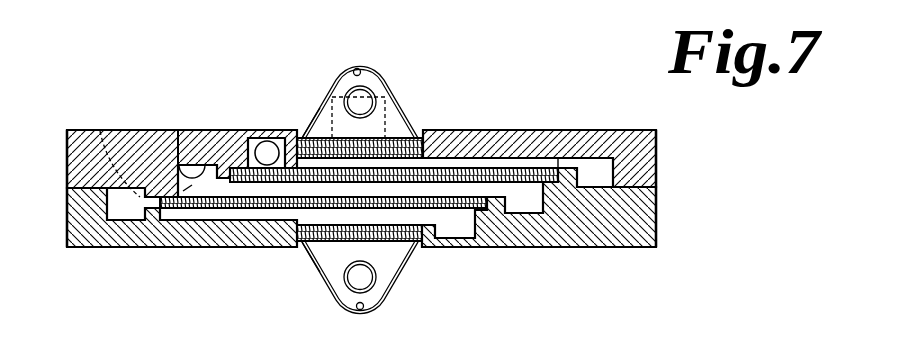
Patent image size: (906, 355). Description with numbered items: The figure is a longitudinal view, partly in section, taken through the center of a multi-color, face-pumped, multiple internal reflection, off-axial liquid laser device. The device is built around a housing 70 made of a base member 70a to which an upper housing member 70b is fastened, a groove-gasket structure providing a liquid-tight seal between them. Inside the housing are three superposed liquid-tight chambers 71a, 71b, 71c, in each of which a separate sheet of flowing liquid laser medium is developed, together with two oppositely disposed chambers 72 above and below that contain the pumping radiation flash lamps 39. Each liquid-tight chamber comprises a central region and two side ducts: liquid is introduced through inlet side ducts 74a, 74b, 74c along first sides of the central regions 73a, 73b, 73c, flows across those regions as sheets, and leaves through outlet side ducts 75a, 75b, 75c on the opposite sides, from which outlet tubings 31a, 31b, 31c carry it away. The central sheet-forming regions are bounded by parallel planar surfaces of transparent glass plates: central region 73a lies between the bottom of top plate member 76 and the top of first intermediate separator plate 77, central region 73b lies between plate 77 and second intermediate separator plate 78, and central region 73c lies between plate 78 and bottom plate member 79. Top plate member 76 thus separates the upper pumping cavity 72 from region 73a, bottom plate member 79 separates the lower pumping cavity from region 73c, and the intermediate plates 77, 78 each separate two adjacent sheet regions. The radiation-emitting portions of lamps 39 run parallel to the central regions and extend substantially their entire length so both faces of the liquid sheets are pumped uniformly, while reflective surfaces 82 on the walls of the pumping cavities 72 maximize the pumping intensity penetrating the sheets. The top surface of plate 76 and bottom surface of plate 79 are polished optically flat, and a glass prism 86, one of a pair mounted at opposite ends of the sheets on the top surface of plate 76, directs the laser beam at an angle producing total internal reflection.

The housing 70 is at (651, 252).
The base member 70a is at (657, 225).
The upper housing member 70b is at (657, 145).
The liquid-tight chamber 71a is at (615, 172).
The liquid-tight chamber 71b is at (550, 206).
The liquid-tight chamber 71c is at (482, 225).
The pump lamp chamber 72 is at (374, 70).
The central region 73a is at (383, 160).
The central region 73b is at (320, 190).
The central region 73c is at (388, 243).
The side duct 74a is at (585, 190).
The side duct 74b is at (512, 204).
The inlet side duct 74c is at (452, 238).
The side duct 75a is at (285, 138).
The side duct 75b is at (170, 209).
The side duct 75c is at (118, 212).
The top plate member 76 is at (317, 127).
The first intermediate separator plate 77 is at (465, 168).
The second intermediate separator plate 78 is at (190, 187).
The bottom plate member 79 is at (333, 244).
The reflective surface 82 is at (356, 70).
The glass prism 86 is at (388, 110).
The flash lamp 39 is at (347, 92).
The outlet tubing 31a is at (248, 138).
The outlet tubing 31b is at (178, 130).
The outlet tubing 31c is at (104, 127).